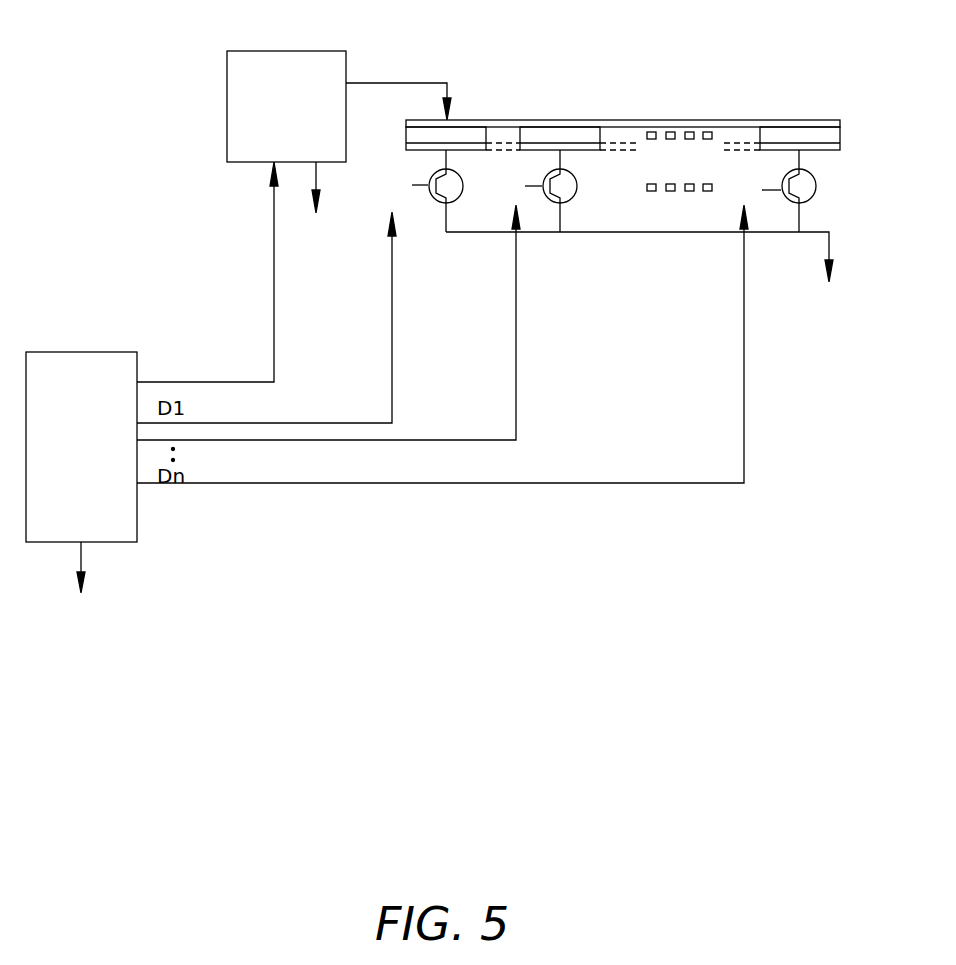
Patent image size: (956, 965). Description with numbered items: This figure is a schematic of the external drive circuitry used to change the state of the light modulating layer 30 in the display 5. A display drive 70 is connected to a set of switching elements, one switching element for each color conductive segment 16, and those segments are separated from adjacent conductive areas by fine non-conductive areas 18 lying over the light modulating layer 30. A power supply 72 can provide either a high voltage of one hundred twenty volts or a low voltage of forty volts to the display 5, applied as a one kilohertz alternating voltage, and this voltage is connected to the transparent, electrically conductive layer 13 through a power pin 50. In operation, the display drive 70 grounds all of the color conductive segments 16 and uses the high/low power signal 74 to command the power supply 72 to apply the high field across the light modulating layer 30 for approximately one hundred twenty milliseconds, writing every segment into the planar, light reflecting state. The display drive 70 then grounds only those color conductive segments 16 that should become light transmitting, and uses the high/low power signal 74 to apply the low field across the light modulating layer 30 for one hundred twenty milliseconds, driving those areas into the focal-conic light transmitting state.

The display 5 is at (771, 46).
The transparent, electrically conductive layer 13 is at (677, 125).
The color conductive segments 16 is at (588, 147).
The non-conductive areas 18 is at (499, 140).
The light modulating layer 30 is at (574, 140).
The power pin 50 is at (452, 92).
The display drive 70 is at (96, 352).
The power supply 72 is at (227, 107).
The high/low power signal 74 is at (272, 250).